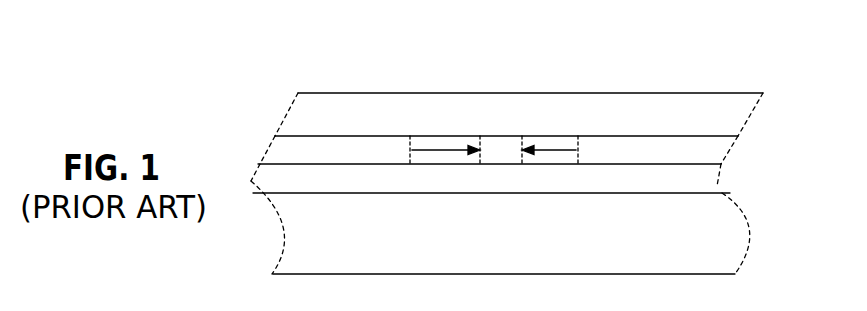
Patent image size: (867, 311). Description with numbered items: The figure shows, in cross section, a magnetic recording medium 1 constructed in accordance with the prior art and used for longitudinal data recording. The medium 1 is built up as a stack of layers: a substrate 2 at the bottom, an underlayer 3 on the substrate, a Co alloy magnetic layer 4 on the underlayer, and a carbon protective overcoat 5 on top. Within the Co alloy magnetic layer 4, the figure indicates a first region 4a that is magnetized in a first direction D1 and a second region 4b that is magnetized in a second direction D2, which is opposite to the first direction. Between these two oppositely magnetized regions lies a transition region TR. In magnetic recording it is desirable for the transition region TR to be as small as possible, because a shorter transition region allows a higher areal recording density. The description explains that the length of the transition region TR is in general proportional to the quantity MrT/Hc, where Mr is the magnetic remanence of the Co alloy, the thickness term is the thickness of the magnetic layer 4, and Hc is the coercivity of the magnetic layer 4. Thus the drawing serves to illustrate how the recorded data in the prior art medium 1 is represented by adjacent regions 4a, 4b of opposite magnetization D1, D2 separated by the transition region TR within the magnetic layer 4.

The magnetic recording medium 1 is at (281, 63).
The substrate 2 is at (673, 249).
The underlayer 3 is at (713, 185).
The Co alloy magnetic layer 4 is at (272, 155).
The first region 4a is at (453, 164).
The second region 4b is at (550, 164).
The carbon protective overcoat 5 is at (705, 131).
The transition region TR is at (498, 136).
The first direction D1 is at (452, 147).
The second direction D2 is at (550, 147).